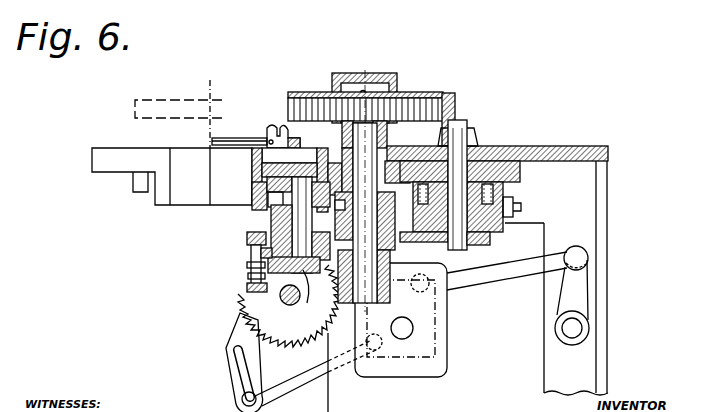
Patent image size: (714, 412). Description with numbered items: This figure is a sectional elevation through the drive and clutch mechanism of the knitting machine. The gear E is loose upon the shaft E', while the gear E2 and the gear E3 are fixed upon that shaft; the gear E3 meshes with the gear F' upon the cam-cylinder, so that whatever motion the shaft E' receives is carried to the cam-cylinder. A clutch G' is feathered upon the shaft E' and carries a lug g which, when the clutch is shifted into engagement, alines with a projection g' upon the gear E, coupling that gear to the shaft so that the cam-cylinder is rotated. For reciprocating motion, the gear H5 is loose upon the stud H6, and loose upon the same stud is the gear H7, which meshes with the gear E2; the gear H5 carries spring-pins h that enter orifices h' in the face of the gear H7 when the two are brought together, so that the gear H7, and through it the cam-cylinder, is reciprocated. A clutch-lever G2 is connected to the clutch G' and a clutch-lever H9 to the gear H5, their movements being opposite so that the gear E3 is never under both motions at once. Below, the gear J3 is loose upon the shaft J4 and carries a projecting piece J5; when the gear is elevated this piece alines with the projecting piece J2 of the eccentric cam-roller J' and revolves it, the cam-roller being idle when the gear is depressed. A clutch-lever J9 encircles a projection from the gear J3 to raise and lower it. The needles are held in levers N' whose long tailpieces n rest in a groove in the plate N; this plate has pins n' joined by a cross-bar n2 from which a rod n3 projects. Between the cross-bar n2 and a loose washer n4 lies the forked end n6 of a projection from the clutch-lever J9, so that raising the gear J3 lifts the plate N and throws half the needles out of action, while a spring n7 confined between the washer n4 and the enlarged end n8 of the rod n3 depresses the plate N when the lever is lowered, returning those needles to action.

The gear F' is at (185, 97).
The gear E3 is at (392, 112).
The gear H7 is at (524, 158).
The orifices h' is at (472, 144).
The levers N' is at (240, 132).
The plate N is at (290, 133).
The tailpieces n is at (284, 132).
The eccentric cam-roller J' is at (269, 176).
The projecting piece J2 is at (256, 196).
The projecting piece J5 is at (272, 214).
The gear J3 is at (270, 234).
The cross-bar n2 is at (252, 240).
The rod n3 is at (256, 250).
The loose washer n4 is at (258, 270).
The forked end n6 is at (250, 262).
The spring n7 is at (252, 276).
The enlarged end n8 is at (250, 288).
The pins n' is at (230, 220).
The shaft J4 is at (306, 290).
The clutch-lever J9 is at (333, 278).
The lug g is at (337, 216).
The projection g' is at (373, 221).
The clutch G' is at (424, 211).
The clutch-lever G2 is at (428, 242).
The stud H6 is at (465, 250).
The clutch-lever H9 is at (488, 241).
The spring-pins h is at (473, 177).
The gear H5 is at (516, 208).
The gear E2 is at (391, 148).
The gear E is at (401, 320).
The shaft E' is at (413, 291).